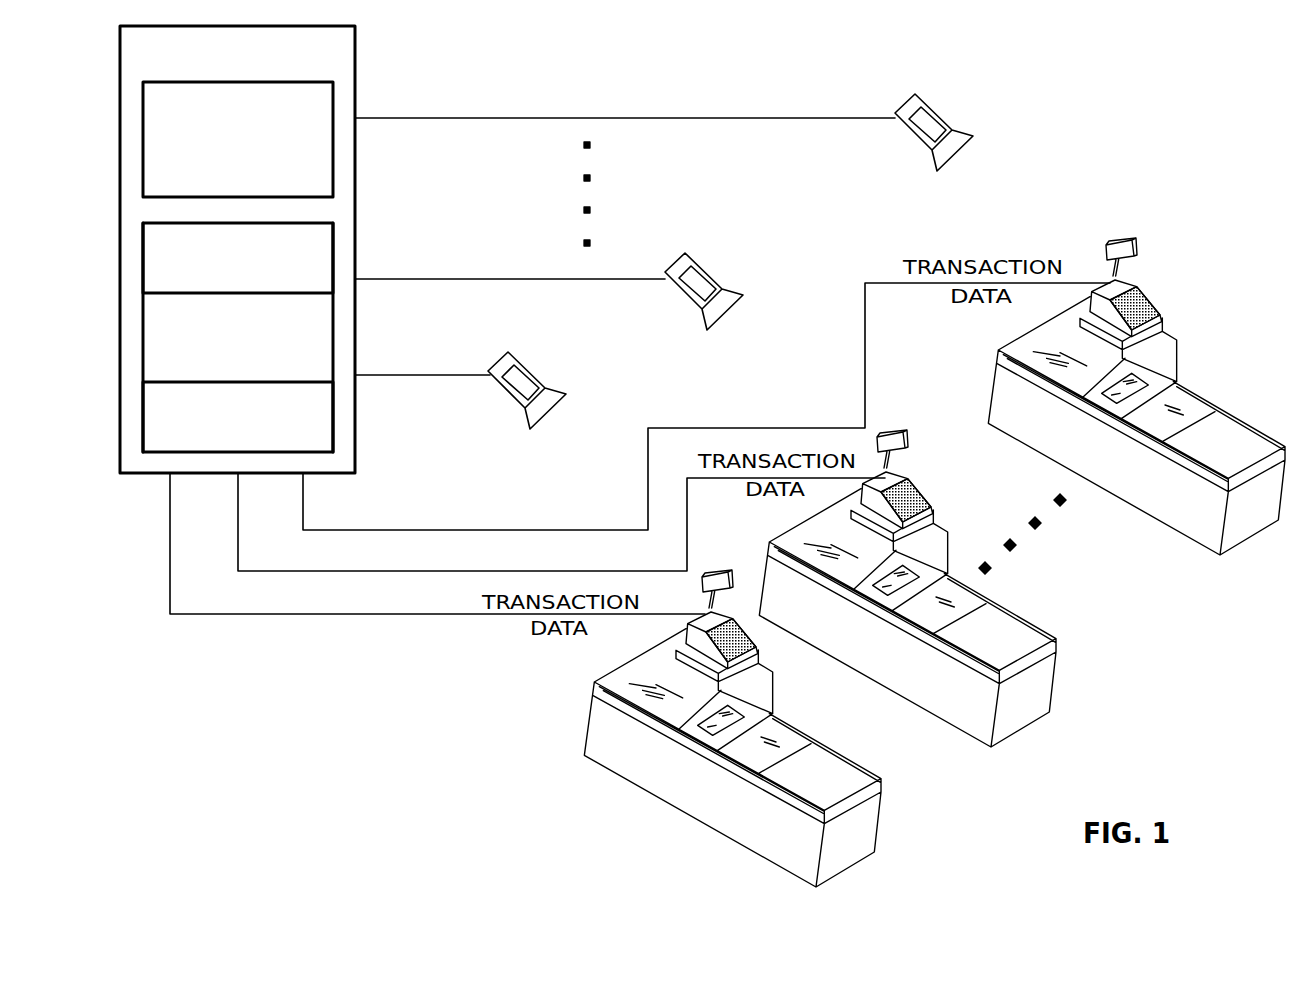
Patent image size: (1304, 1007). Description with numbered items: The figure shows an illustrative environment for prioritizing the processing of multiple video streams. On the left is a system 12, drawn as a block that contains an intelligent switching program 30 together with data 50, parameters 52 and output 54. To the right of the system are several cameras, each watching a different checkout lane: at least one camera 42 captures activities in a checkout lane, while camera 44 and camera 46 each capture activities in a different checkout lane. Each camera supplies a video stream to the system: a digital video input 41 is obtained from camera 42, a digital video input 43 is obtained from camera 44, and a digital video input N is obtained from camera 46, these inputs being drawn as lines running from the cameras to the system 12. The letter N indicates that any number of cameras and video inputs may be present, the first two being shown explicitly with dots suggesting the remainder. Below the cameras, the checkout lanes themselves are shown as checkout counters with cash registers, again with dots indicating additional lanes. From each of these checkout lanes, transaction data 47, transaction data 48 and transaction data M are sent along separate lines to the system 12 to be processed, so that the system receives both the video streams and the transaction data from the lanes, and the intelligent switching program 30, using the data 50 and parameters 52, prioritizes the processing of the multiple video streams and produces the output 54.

The system 12 is at (331, 67).
The intelligent switching program 30 is at (244, 185).
The data 50 is at (244, 285).
The parameters 52 is at (244, 367).
The output 54 is at (244, 442).
The digital video input 41 is at (423, 375).
The camera 42 is at (533, 372).
The digital video input 43 is at (423, 279).
The camera 44 is at (708, 273).
The camera 46 is at (938, 113).
The transaction data 47 is at (342, 614).
The transaction data 48 is at (380, 571).
The digital video input N is at (423, 118).
The transaction data M is at (550, 530).